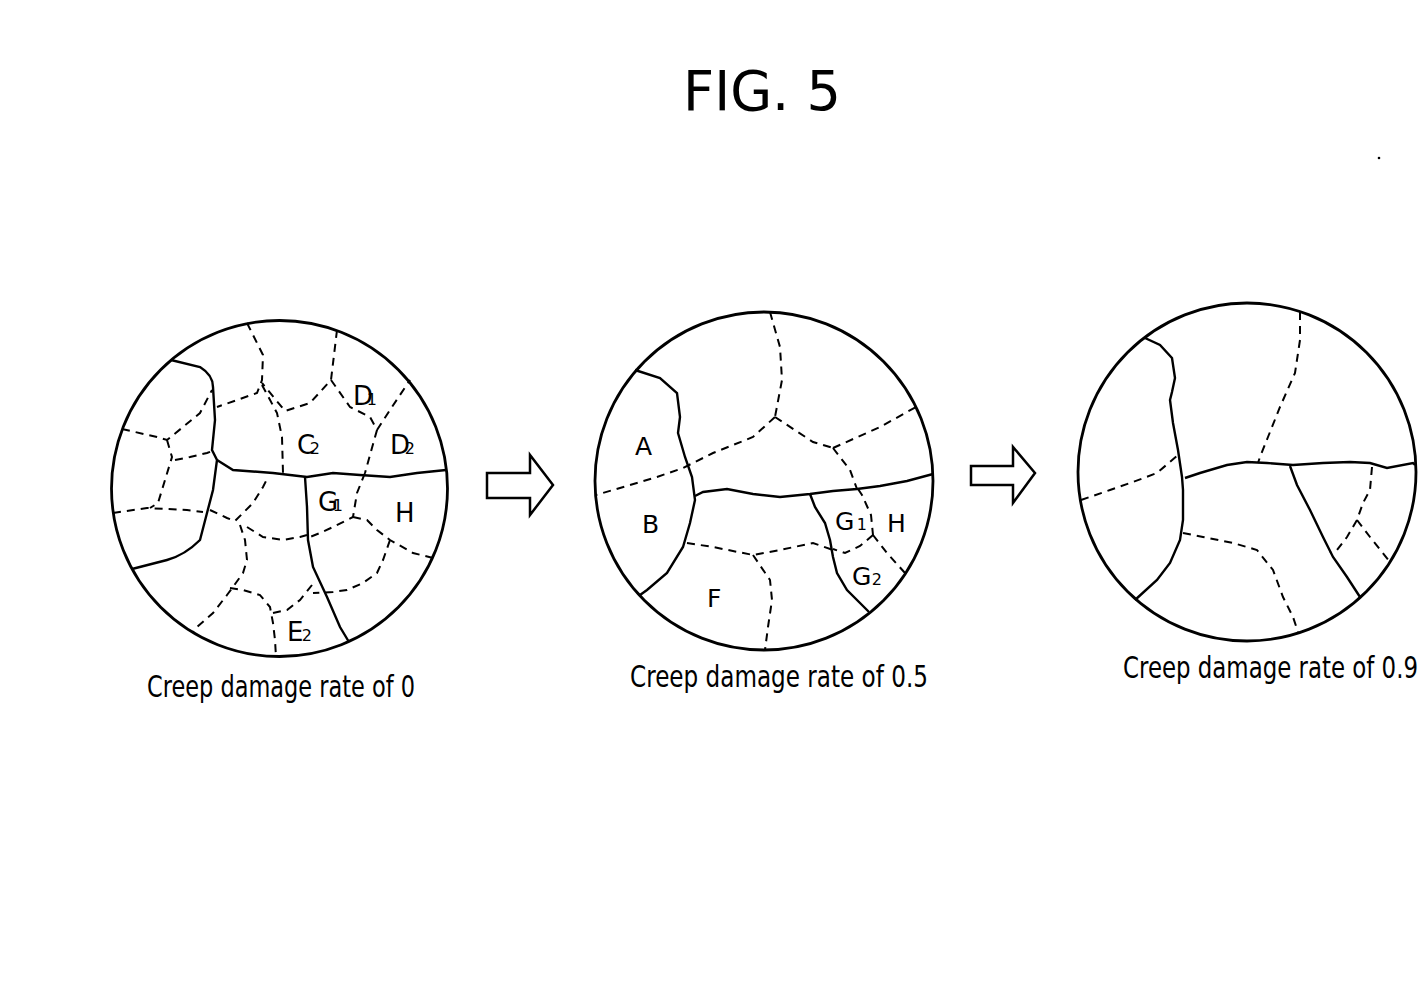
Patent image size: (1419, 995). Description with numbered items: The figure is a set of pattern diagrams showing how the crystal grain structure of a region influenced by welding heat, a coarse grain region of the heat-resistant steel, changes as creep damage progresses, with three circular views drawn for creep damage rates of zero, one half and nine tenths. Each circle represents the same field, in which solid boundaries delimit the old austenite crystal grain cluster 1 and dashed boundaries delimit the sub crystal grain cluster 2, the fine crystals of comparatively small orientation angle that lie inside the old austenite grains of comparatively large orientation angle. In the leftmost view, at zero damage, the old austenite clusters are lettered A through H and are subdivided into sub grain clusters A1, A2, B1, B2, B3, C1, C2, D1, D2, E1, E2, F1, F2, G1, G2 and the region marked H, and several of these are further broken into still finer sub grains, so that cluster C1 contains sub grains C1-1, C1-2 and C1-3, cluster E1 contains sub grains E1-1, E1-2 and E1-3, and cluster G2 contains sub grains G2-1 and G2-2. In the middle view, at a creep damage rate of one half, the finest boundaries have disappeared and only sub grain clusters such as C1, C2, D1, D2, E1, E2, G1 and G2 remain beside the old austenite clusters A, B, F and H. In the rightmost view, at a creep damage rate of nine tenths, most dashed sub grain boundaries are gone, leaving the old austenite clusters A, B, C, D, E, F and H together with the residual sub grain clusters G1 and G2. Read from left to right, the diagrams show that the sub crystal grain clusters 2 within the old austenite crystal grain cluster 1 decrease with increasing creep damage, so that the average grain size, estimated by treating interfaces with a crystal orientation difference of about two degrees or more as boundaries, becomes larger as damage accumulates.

The old austenite crystal grain cluster 1 is at (200, 355).
The sub crystal grain cluster 2 is at (455, 330).
The old austenite grain cluster A is at (1154, 469).
The old austenite grain cluster B is at (1129, 495).
The old austenite grain cluster C is at (1261, 387).
The old austenite grain cluster D is at (1334, 416).
The old austenite grain cluster E is at (1300, 491).
The old austenite grain cluster F is at (1240, 582).
The old austenite grain cluster H is at (1374, 528).
The sub grain cluster G1 is at (1331, 531).
The sub grain cluster G2 is at (1351, 550).
The sub grain cluster C1 is at (749, 364).
The sub grain cluster C2 is at (798, 450).
The sub grain cluster D1 is at (868, 417).
The sub grain cluster D2 is at (870, 466).
The sub grain cluster E1 is at (760, 531).
The sub grain cluster E2 is at (790, 602).
The sub grain cluster A1 is at (167, 414).
The sub grain cluster A2 is at (195, 442).
The sub grain cluster B1 is at (152, 474).
The sub grain cluster B2 is at (189, 487).
The sub grain cluster B3 is at (158, 528).
The sub grain C1-1 is at (239, 365).
The sub grain C1-2 is at (257, 429).
The sub grain C1-3 is at (294, 370).
The sub grain E1-1 is at (239, 499).
The sub grain E1-2 is at (277, 521).
The sub grain E1-3 is at (245, 578).
The sub grain cluster F1 is at (235, 612).
The sub grain cluster F2 is at (243, 632).
The sub grain G2-1 is at (351, 566).
The sub grain G2-2 is at (370, 610).